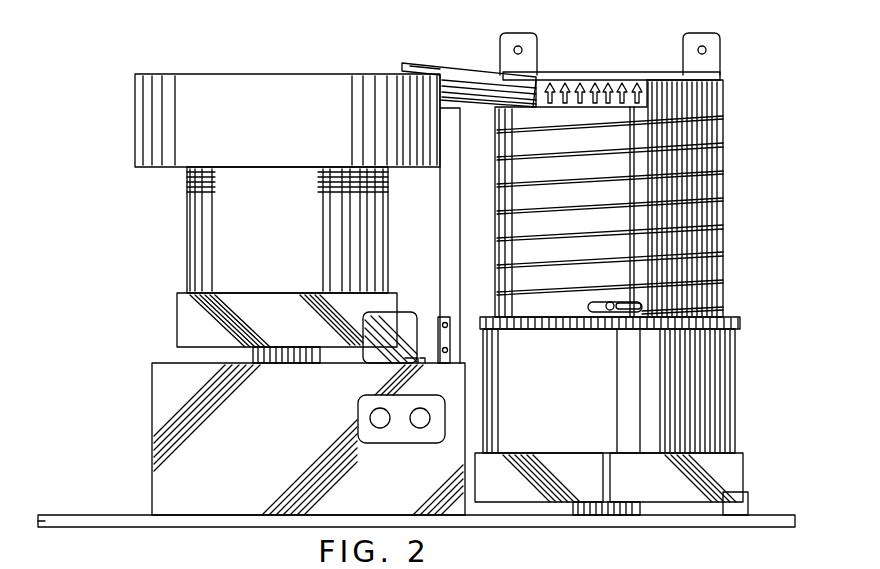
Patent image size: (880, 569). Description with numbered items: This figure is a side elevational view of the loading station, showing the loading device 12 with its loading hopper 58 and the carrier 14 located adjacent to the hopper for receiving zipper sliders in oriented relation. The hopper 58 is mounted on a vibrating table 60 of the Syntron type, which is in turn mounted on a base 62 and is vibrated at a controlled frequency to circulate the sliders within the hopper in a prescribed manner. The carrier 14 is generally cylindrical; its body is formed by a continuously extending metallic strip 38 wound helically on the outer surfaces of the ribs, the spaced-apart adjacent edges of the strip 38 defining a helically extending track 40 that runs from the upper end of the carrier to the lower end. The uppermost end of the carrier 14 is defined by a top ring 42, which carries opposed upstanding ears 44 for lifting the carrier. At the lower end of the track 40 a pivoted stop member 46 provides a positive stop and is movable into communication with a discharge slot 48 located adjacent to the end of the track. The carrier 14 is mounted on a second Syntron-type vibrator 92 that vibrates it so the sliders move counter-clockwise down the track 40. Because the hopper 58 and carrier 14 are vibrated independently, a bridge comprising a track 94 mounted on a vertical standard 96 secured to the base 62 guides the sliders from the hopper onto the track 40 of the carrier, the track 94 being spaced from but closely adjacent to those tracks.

The loading device 12 is at (152, 228).
The carrier 14 is at (735, 146).
The continuously extending metallic strip 38 is at (718, 104).
The helically extending track 40 is at (722, 196).
The top ring 42 is at (597, 73).
The upstanding ears 44 is at (530, 57).
The pivoted stop member 46 is at (607, 314).
The discharge slot 48 is at (592, 314).
The loading hopper 58 is at (226, 64).
The vibrating table 60 is at (205, 245).
The base 62 is at (160, 403).
The vibrator 92 is at (722, 396).
The track 94 is at (468, 76).
The vertical standard 96 is at (443, 213).